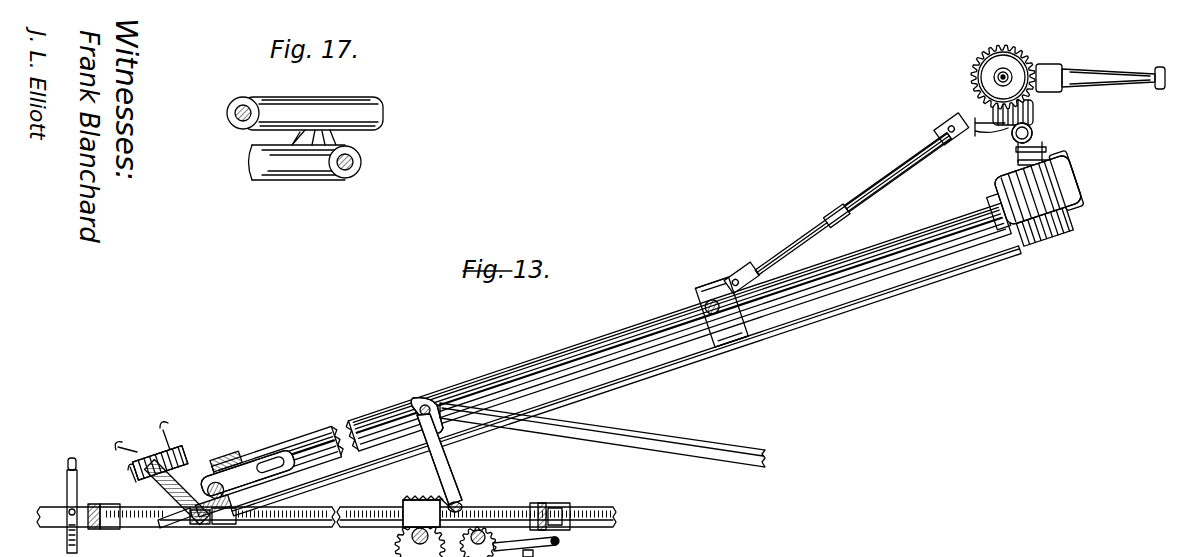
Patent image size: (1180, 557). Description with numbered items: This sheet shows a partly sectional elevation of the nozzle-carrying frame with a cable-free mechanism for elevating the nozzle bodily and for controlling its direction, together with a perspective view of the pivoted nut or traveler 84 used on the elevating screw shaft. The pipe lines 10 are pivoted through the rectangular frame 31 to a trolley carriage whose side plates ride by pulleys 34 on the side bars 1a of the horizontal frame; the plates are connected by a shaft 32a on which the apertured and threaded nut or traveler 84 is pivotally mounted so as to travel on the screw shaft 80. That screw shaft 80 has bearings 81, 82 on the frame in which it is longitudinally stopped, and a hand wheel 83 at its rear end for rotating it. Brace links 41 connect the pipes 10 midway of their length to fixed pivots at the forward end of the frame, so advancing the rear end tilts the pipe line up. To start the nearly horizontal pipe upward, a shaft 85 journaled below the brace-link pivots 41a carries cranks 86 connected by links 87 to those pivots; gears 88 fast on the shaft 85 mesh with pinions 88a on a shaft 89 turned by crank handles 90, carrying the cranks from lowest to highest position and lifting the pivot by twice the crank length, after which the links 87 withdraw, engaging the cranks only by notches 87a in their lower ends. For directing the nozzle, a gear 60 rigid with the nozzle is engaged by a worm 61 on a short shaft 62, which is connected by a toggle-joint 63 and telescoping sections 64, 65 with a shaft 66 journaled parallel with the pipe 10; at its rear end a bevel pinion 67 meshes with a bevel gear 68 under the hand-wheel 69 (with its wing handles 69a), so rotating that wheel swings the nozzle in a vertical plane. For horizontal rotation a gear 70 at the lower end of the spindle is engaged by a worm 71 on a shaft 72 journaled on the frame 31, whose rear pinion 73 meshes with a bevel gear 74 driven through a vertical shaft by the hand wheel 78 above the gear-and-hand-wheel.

In FIG. 17, the nut or traveler 84 is at (311, 170).
In FIG. 13, the nut or traveler 84 is at (232, 520).
In FIG. 13, the pipe lines 10 is at (492, 388).
In FIG. 13, the shaft 66 is at (574, 348).
In FIG. 13, the toggle-joint 63 is at (748, 288).
In FIG. 13, the shaft 72 is at (915, 270).
In FIG. 13, the rectangular frame 31 is at (240, 485).
In FIG. 13, the bevel pinion 67 is at (188, 484).
In FIG. 13, the bevel gear 68 is at (150, 497).
In FIG. 13, the wing handles 69a is at (128, 455).
In FIG. 13, the hand wheel 78 is at (156, 440).
In FIG. 13, the hand-wheel 69 is at (130, 485).
In FIG. 13, the bearing 81 is at (70, 505).
In FIG. 13, the hand wheel 83 is at (68, 508).
In FIG. 13, the screw shaft 80 is at (358, 508).
In FIG. 13, the pinion 73 is at (202, 520).
In FIG. 13, the worm 71 is at (170, 522).
In FIG. 13, the bevel gear 74 is at (166, 547).
In FIG. 13, the pulleys 34 is at (284, 547).
In FIG. 13, the shaft 85 is at (367, 547).
In FIG. 13, the side bars 1a is at (673, 547).
In FIG. 13, the shaft 32a is at (232, 478).
In FIG. 13, the pivots 41a is at (422, 402).
In FIG. 13, the brace links 41 is at (700, 446).
In FIG. 13, the links 87 is at (438, 470).
In FIG. 13, the cranks 86 is at (458, 502).
In FIG. 13, the notches 87a is at (462, 512).
In FIG. 13, the gears 88 is at (378, 537).
In FIG. 13, the shaft 89 is at (482, 533).
In FIG. 13, the pinions 88a is at (492, 530).
In FIG. 13, the bearing 82 is at (545, 505).
In FIG. 13, the crank handles 90 is at (558, 540).
In FIG. 13, the telescoping section 64 is at (812, 226).
In FIG. 13, the telescoping section 65 is at (868, 184).
In FIG. 13, the short shaft 62 is at (978, 128).
In FIG. 13, the worm 61 is at (1036, 116).
In FIG. 13, the gear 60 is at (972, 78).
In FIG. 13, the gear 70 is at (1068, 212).